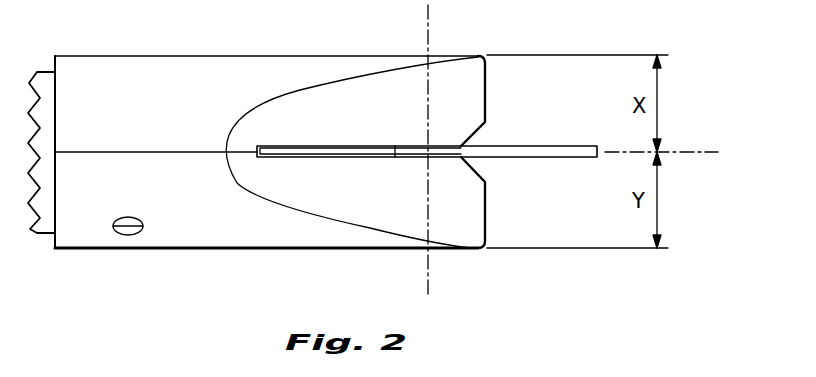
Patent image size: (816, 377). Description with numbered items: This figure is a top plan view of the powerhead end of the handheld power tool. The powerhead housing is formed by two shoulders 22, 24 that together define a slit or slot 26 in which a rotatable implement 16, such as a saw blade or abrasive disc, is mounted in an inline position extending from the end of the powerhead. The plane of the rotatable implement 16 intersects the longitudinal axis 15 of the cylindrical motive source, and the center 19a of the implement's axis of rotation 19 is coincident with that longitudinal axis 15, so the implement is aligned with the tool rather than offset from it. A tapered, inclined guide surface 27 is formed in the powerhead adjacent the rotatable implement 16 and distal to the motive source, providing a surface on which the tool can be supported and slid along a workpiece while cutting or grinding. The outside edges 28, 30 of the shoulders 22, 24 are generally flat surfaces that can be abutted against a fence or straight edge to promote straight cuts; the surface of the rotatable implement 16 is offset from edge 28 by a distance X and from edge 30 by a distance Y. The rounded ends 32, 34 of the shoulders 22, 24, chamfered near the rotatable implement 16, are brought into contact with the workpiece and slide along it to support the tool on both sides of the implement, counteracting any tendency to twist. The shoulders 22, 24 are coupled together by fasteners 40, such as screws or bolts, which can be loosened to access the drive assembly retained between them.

The longitudinal axis 15 is at (712, 150).
The rotatable implement 16 is at (580, 145).
The axis of rotation 19 is at (432, 13).
The center of the axis of rotation 19a is at (430, 152).
The shoulder 22 is at (257, 72).
The shoulder 24 is at (258, 230).
The slot 26 is at (330, 150).
The guide surface 27 is at (363, 93).
The outside edge 28 is at (165, 56).
The outside edge 30 is at (177, 252).
The end of shoulder 32 is at (486, 97).
The end of shoulder 34 is at (486, 210).
The fastener 40 is at (128, 235).